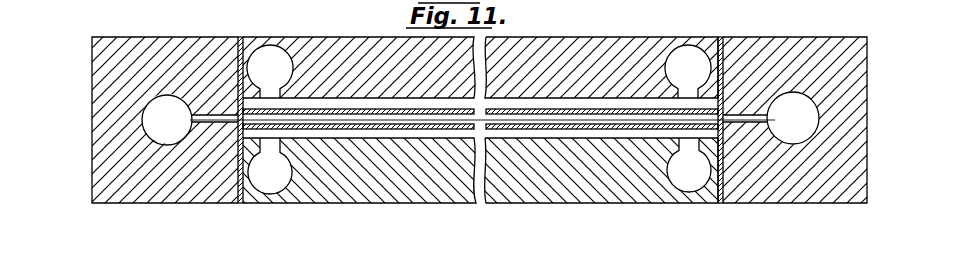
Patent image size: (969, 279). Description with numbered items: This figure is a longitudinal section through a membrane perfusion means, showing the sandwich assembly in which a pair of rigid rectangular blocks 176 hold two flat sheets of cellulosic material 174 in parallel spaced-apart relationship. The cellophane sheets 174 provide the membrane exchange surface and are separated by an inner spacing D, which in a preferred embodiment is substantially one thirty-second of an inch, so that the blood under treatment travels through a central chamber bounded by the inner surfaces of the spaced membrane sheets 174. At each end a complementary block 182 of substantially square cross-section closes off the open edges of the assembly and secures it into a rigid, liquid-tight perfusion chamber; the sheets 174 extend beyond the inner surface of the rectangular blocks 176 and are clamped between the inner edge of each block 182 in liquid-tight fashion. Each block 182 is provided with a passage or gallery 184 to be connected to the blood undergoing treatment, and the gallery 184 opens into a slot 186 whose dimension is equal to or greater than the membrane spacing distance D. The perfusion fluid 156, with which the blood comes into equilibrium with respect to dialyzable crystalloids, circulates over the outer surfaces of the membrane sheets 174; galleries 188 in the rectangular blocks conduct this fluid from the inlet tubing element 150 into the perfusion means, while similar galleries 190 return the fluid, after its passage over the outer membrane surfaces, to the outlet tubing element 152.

The complementary block 182 is at (162, 185).
The rigid rectangular block 176 is at (346, 44).
The sheet of cellulosic material 174 is at (728, 38).
The slot 186 is at (297, 103).
The inner spacing D is at (380, 118).
The passage or gallery 184 is at (170, 95).
The gallery 188 is at (281, 46).
The gallery 190 is at (694, 52).
The inlet tubing element 150 is at (143, 2).
The perfusion fluid 156 is at (838, 1).
The outlet tubing element 152 is at (110, 4).